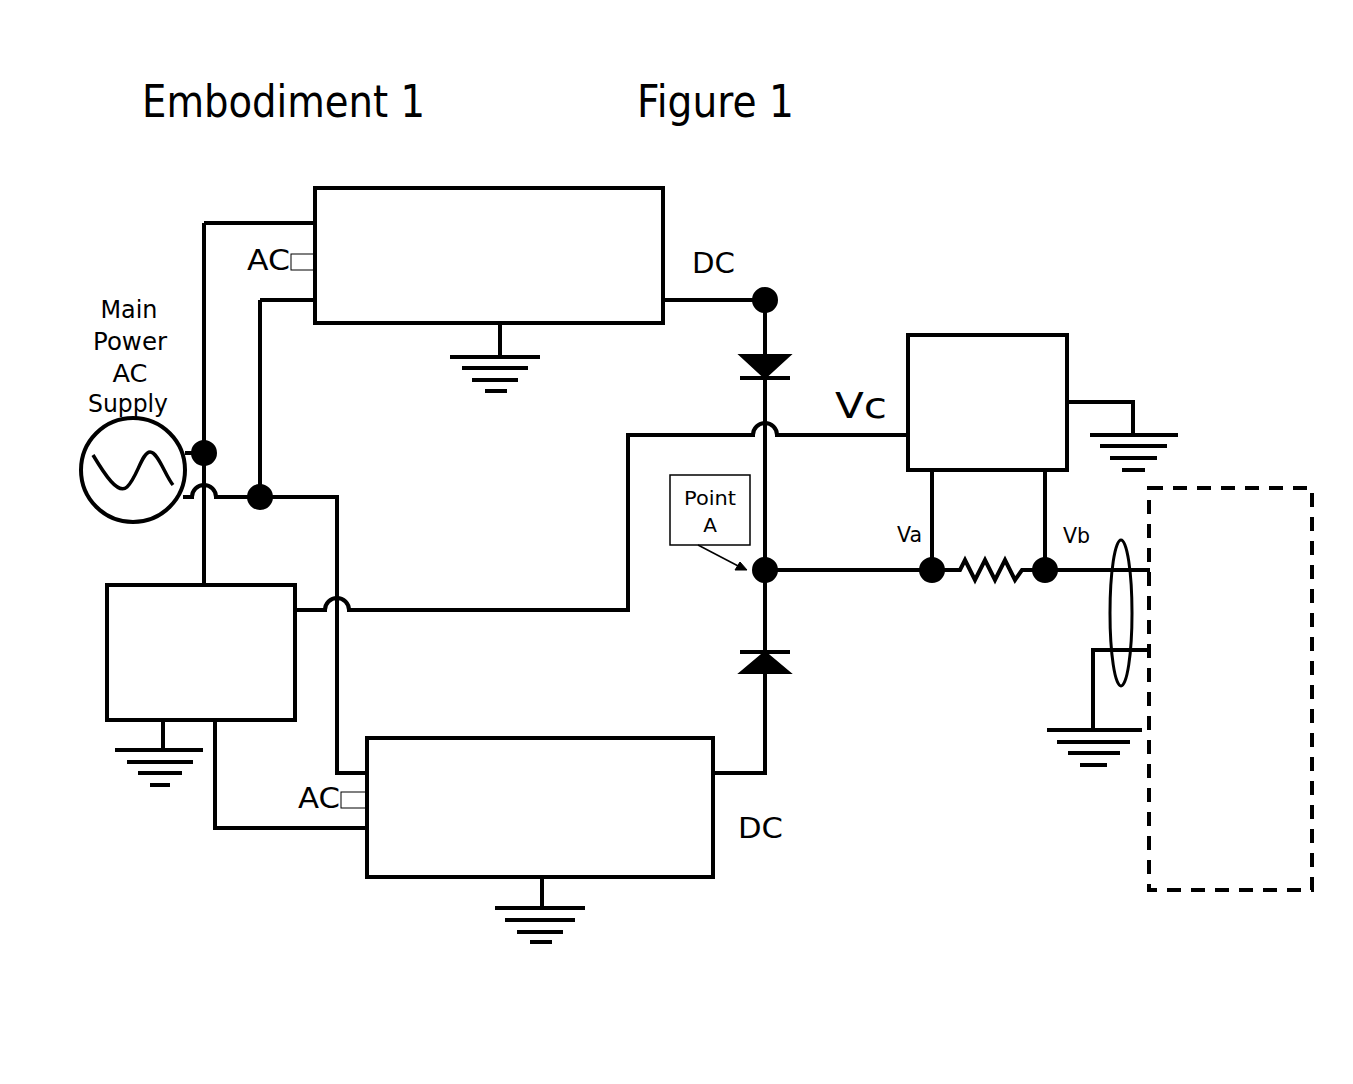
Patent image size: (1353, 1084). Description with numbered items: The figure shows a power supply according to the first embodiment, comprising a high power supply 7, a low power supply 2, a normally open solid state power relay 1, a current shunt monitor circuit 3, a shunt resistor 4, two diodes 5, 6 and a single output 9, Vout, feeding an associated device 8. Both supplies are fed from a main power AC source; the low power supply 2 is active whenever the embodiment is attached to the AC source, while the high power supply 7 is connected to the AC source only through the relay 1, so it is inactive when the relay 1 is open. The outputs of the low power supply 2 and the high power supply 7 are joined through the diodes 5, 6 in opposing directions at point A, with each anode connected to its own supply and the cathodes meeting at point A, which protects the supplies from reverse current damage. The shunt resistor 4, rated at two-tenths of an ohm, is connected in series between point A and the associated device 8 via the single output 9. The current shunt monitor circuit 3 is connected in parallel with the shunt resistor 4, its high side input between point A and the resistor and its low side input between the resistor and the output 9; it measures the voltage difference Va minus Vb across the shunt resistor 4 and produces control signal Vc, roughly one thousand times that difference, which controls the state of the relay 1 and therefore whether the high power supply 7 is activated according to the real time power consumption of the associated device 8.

The normally open solid state power relay 1 is at (186, 676).
The low power supply 2 is at (489, 264).
The current shunt monitor circuit 3 is at (1043, 427).
The shunt resistor 4 is at (988, 590).
The diode 5 is at (749, 359).
The diode 6 is at (751, 649).
The high power supply 7 is at (540, 811).
The associated device 8 is at (1230, 689).
The single output 9 is at (1102, 580).